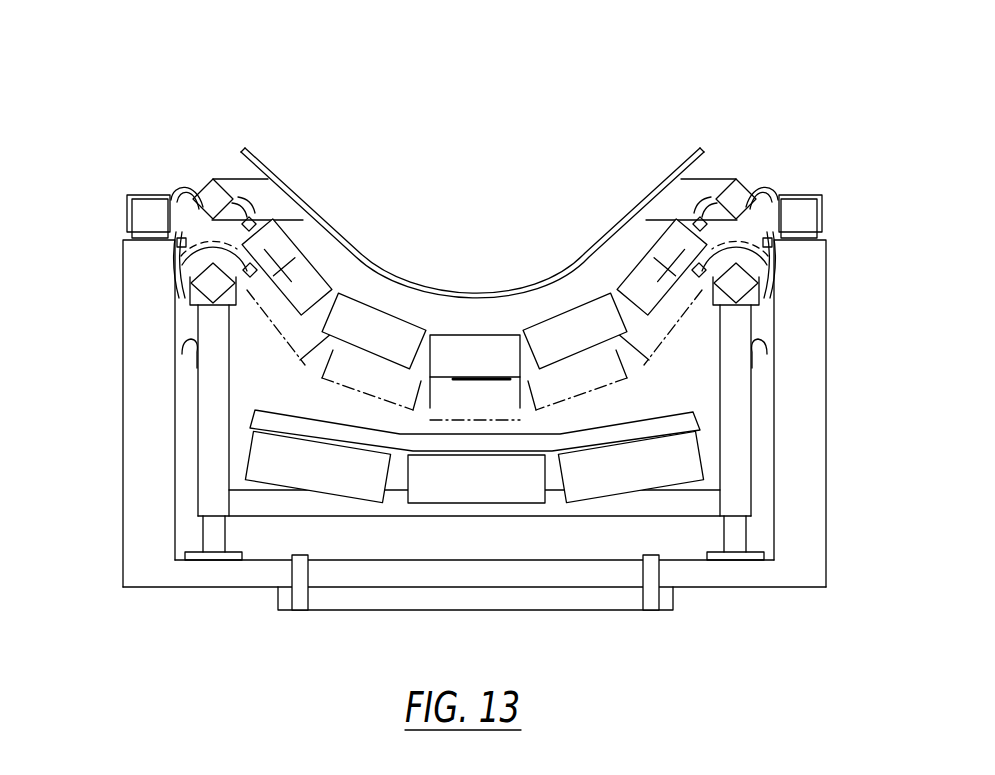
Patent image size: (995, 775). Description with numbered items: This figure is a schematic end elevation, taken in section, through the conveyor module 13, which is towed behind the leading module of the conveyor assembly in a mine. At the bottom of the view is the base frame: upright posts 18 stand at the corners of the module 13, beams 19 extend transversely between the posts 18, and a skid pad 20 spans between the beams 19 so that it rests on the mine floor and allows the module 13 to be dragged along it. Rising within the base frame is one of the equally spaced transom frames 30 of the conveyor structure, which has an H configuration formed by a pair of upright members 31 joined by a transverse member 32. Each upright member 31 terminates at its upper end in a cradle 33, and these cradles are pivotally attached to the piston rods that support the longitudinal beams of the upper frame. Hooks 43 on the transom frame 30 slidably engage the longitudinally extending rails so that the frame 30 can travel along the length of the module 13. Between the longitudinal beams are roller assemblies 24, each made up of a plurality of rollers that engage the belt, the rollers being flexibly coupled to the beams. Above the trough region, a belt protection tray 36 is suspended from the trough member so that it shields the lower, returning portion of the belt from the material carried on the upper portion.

The conveyor module 13 is at (468, 362).
The upright post 18 is at (133, 300).
The beam 19 is at (751, 578).
The skid pad 20 is at (662, 612).
The roller assembly 24 is at (405, 390).
The transom frame 30 is at (536, 432).
The upright member 31 is at (740, 327).
The transverse member 32 is at (705, 498).
The cradle 33 is at (772, 300).
The belt protection tray 36 is at (299, 200).
The hook 43 is at (183, 353).